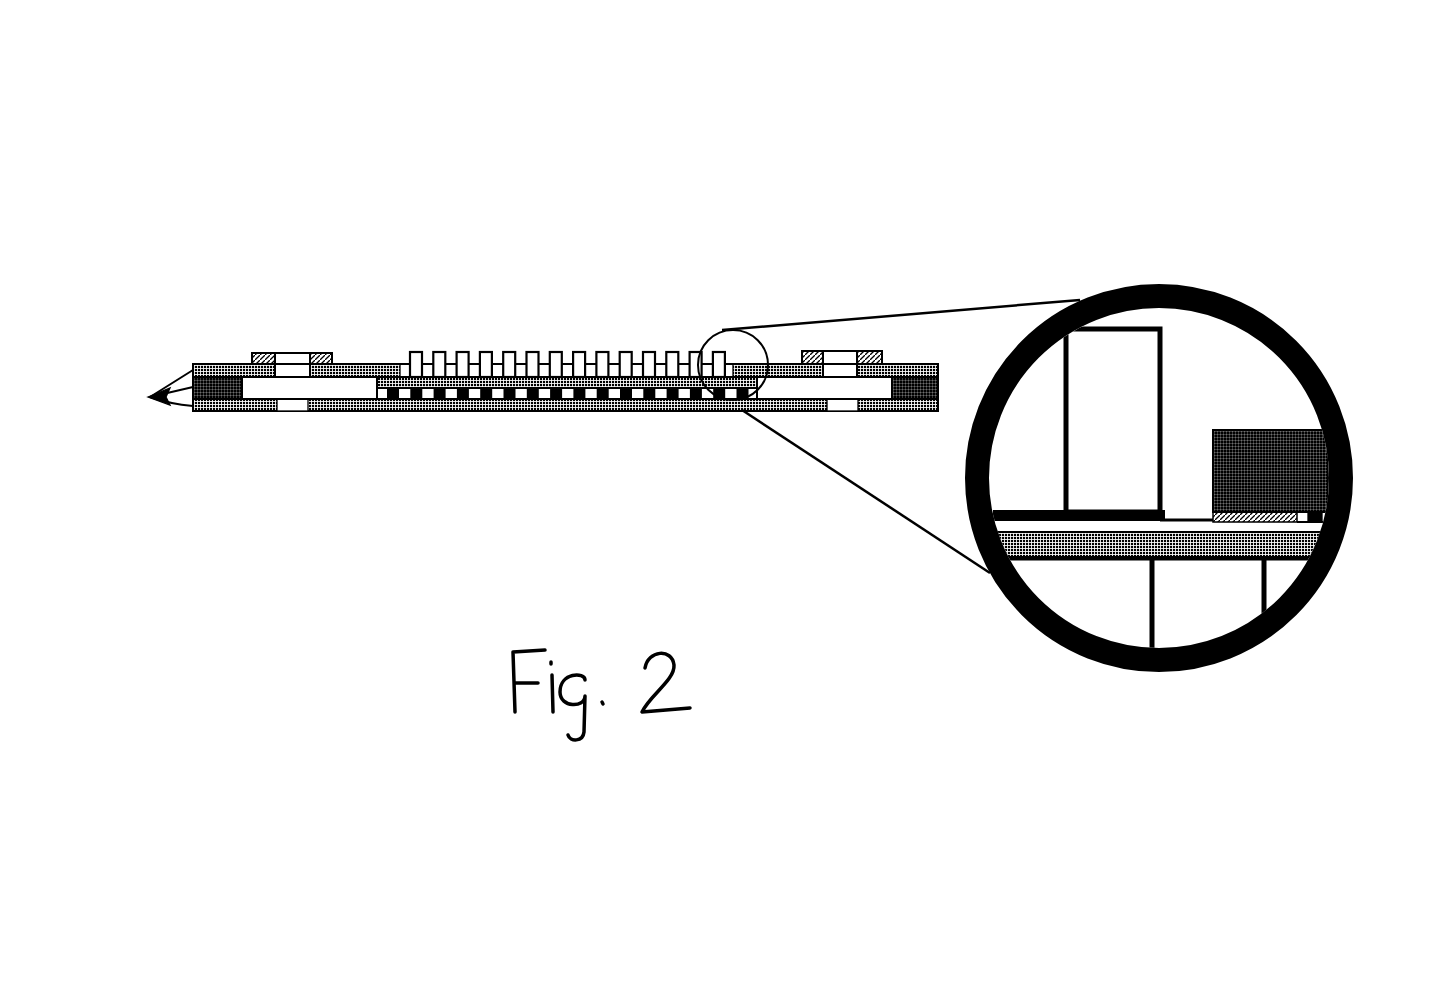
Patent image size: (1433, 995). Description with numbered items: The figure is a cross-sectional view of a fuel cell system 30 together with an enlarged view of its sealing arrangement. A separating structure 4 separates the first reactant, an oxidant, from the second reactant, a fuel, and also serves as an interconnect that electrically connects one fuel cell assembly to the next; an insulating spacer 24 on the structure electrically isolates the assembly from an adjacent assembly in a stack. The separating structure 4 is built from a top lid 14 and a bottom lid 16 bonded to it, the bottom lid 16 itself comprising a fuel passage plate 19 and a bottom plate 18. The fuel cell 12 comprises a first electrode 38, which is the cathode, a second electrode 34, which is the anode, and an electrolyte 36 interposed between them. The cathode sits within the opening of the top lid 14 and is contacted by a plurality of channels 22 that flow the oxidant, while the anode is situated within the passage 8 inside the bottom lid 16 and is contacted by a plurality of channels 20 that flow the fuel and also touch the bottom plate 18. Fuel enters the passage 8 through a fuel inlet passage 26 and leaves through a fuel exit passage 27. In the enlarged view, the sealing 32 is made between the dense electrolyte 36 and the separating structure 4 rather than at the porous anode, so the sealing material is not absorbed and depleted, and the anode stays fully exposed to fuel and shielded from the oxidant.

The fuel cell system 30 is at (148, 213).
The separating structure 4 is at (154, 396).
The insulating spacer 24 is at (253, 353).
The fuel cell 12 is at (377, 377).
The channels 22 is at (491, 353).
The fuel inlet passage 26 is at (292, 407).
The passage 8 is at (345, 385).
The channels 20 is at (492, 399).
The top lid 14 is at (905, 368).
The bottom lid 16 is at (940, 373).
The bottom plate 18 is at (875, 402).
The fuel passage plate 19 is at (905, 375).
The first electrode 38 is at (963, 510).
The fuel exit passage 27 is at (842, 402).
The sealing 32 is at (1350, 522).
The electrolyte 36 is at (1338, 538).
The second electrode 34 is at (1323, 578).